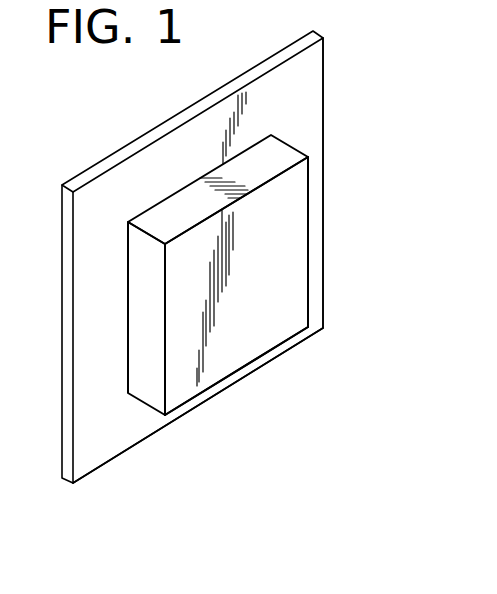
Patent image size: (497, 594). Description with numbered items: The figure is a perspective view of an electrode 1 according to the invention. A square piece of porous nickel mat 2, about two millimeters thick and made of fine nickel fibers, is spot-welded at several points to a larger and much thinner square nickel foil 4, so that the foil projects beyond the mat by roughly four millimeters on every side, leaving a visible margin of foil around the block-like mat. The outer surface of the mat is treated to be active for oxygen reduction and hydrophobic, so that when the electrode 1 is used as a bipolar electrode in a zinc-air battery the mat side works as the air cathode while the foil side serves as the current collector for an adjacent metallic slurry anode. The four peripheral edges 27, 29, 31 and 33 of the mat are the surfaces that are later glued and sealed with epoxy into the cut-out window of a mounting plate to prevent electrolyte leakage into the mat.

The electrode 1 is at (348, 212).
The nickel mat 2 is at (293, 188).
The nickel foil 4 is at (310, 80).
The peripheral edge 27 is at (177, 208).
The peripheral edge 29 is at (150, 337).
The peripheral edge 31 is at (252, 363).
The peripheral edge 33 is at (308, 273).